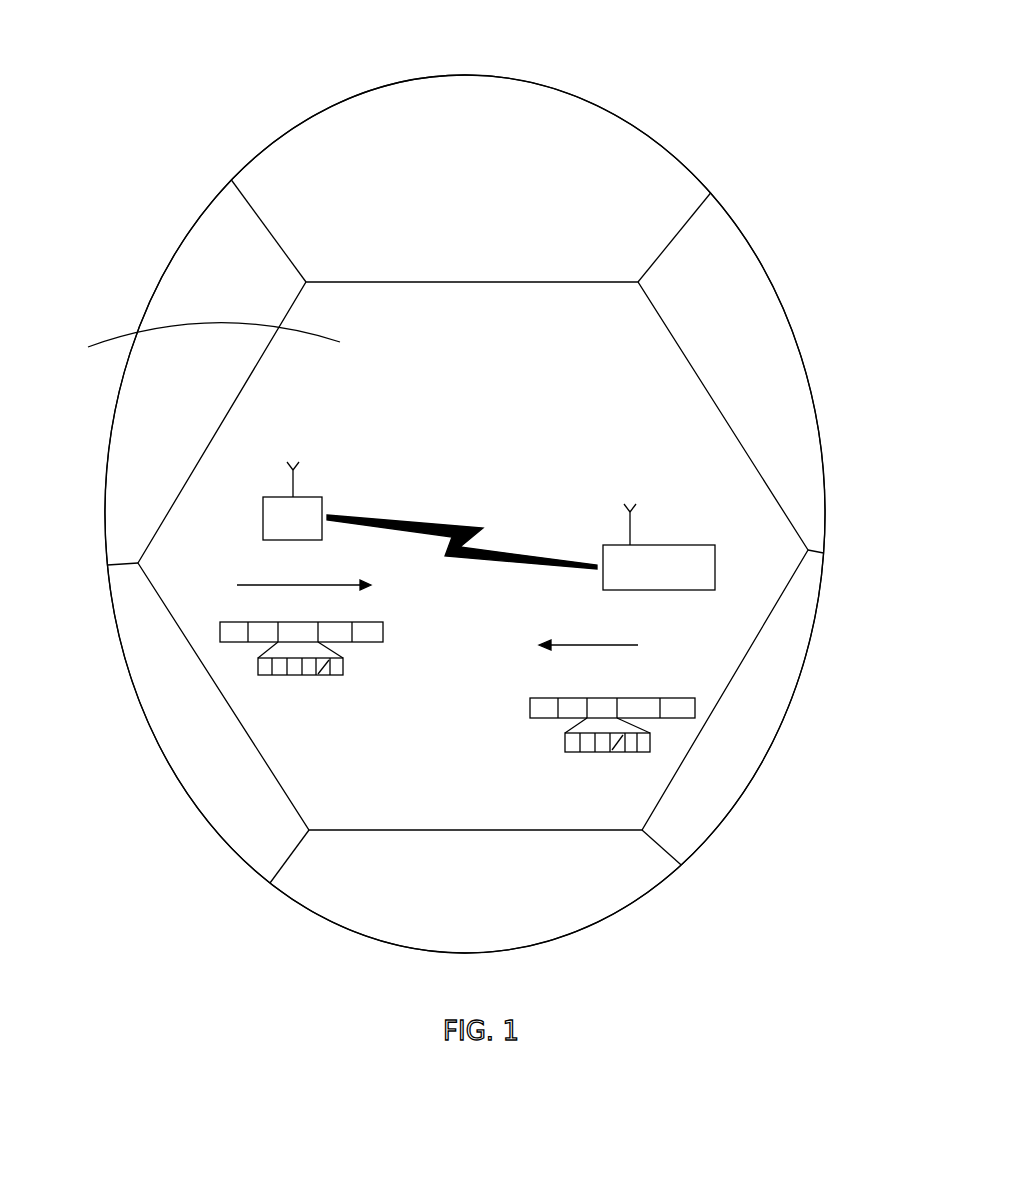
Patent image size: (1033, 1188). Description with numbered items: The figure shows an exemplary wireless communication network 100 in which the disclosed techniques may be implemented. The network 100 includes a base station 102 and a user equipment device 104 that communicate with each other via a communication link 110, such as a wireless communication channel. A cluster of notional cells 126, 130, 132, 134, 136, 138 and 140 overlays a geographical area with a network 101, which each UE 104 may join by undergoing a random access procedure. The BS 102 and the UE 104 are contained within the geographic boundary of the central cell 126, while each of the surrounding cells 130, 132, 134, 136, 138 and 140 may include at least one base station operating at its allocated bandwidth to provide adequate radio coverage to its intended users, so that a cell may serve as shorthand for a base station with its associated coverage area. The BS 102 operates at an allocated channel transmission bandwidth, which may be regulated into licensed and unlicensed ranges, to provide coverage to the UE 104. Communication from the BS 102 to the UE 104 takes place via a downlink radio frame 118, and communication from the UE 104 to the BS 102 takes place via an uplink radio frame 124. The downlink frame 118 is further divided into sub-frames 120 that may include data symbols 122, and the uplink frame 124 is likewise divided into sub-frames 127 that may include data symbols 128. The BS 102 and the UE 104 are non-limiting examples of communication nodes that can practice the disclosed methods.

The wireless communication network 100 is at (411, 34).
The network 101 is at (600, 98).
The base station 102 is at (262, 512).
The user equipment device 104 is at (682, 545).
The communication link 110 is at (462, 520).
The downlink radio frame 118 is at (220, 632).
The sub-frame 120 is at (258, 666).
The data symbol 122 is at (323, 676).
The uplink radio frame 124 is at (663, 696).
The cell 126 is at (193, 341).
The sub-frame 127 is at (565, 743).
The data symbol 128 is at (619, 754).
The cell 130 is at (190, 250).
The cell 132 is at (320, 132).
The cell 134 is at (732, 268).
The cell 136 is at (708, 807).
The cell 138 is at (356, 898).
The cell 140 is at (197, 779).